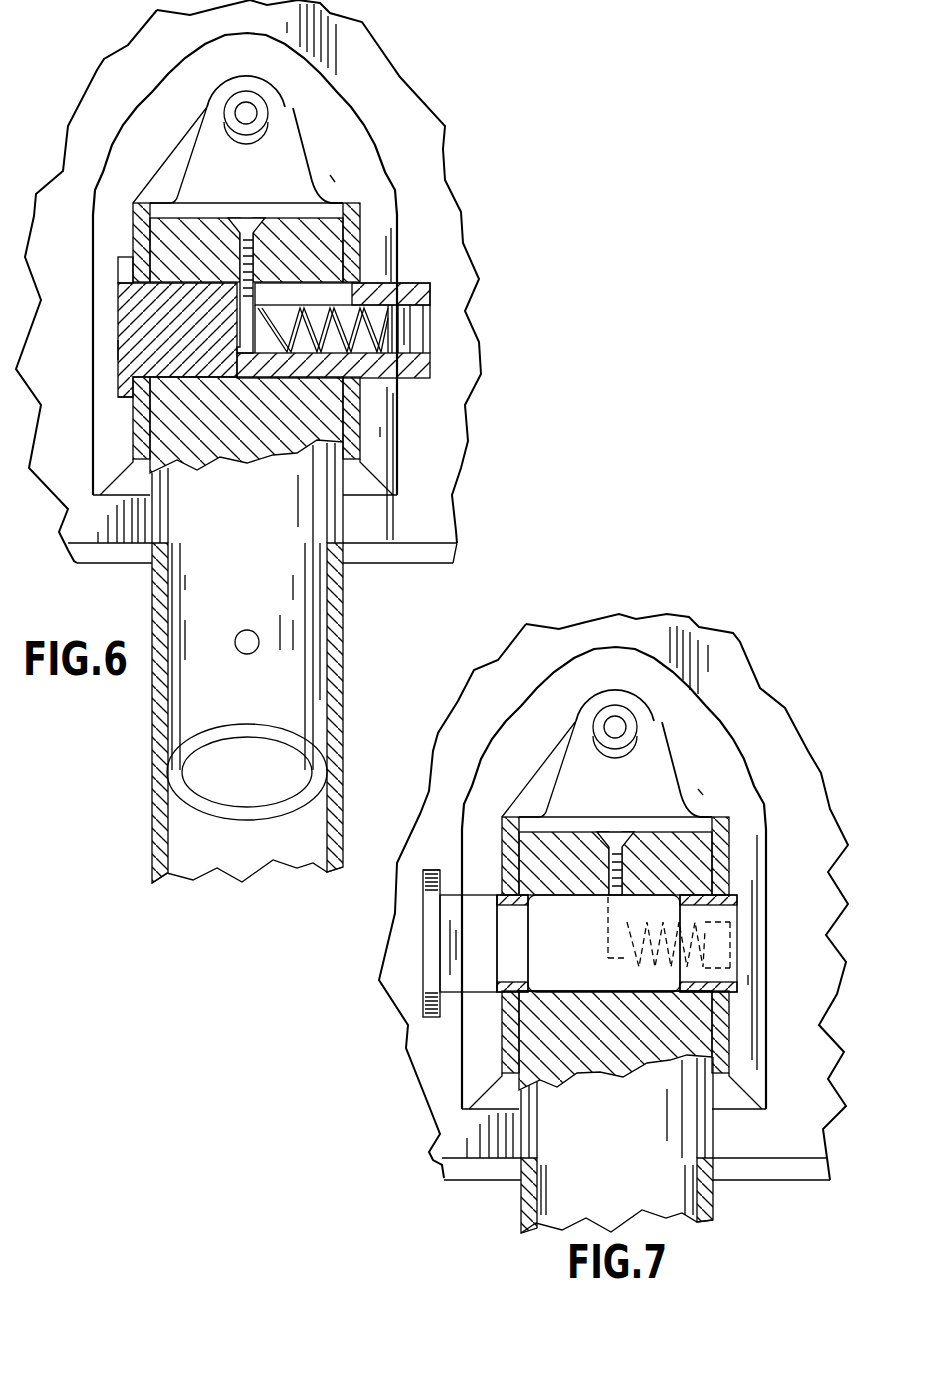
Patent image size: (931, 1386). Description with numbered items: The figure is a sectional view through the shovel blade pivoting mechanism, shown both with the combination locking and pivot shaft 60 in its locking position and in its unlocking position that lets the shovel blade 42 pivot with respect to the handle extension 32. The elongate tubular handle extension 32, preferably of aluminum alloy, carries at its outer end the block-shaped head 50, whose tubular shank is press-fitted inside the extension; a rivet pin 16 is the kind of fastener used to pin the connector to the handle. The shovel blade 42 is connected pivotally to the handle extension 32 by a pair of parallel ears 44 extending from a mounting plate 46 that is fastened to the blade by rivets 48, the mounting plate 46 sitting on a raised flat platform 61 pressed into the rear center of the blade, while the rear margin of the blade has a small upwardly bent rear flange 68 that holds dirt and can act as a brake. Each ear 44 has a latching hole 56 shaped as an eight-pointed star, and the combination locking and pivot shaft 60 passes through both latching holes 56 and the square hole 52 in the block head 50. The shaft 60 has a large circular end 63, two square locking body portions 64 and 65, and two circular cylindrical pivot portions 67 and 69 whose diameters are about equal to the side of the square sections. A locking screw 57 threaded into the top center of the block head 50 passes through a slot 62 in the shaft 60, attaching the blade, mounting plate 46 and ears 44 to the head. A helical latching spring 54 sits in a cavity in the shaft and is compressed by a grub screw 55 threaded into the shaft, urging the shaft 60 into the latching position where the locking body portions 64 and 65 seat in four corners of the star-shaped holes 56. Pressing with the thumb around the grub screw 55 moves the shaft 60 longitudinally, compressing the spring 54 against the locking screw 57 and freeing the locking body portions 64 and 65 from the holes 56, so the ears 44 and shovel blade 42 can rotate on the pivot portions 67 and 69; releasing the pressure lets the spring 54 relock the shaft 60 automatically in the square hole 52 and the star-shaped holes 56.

In FIG. 6, the rivet pin 16 is at (247, 630).
In FIG. 6, the handle extension 32 is at (347, 652).
In FIG. 7, the handle extension 32 is at (617, 1145).
In FIG. 6, the shovel blade 42 is at (353, 48).
In FIG. 7, the shovel blade 42 is at (725, 662).
In FIG. 6, the ears 44 is at (135, 218).
In FIG. 7, the ears 44 is at (614, 878).
In FIG. 6, the mounting plate 46 is at (205, 160).
In FIG. 7, the mounting plate 46 is at (573, 772).
In FIG. 6, the rivets 48 is at (246, 100).
In FIG. 7, the rivets 48 is at (615, 715).
In FIG. 6, the block-shaped head 50 is at (288, 218).
In FIG. 7, the block-shaped head 50 is at (615, 953).
In FIG. 6, the square hole 52 is at (163, 350).
In FIG. 6, the latching spring 54 is at (237, 330).
In FIG. 6, the grub screw 55 is at (420, 343).
In FIG. 6, the latching holes 56 is at (138, 297).
In FIG. 7, the latching holes 56 is at (513, 903).
In FIG. 6, the locking screw 57 is at (245, 218).
In FIG. 7, the locking screw 57 is at (615, 832).
In FIG. 6, the combination locking and pivot shaft 60 is at (425, 280).
In FIG. 6, the platform 61 is at (330, 182).
In FIG. 7, the platform 61 is at (700, 793).
In FIG. 6, the slot 62 is at (312, 300).
In FIG. 7, the slot 62 is at (615, 863).
In FIG. 6, the large circular end 63 is at (120, 403).
In FIG. 7, the large circular end 63 is at (433, 920).
In FIG. 7, the square locking body portion 64 is at (456, 908).
In FIG. 7, the square locking body portion 65 is at (575, 975).
In FIG. 7, the circular cylindrical pivot portion 67 is at (510, 960).
In FIG. 6, the rear flange 68 is at (393, 567).
In FIG. 7, the rear flange 68 is at (636, 1169).
In FIG. 6, the circular cylindrical pivot portion 69 is at (430, 370).
In FIG. 7, the circular cylindrical pivot portion 69 is at (723, 952).